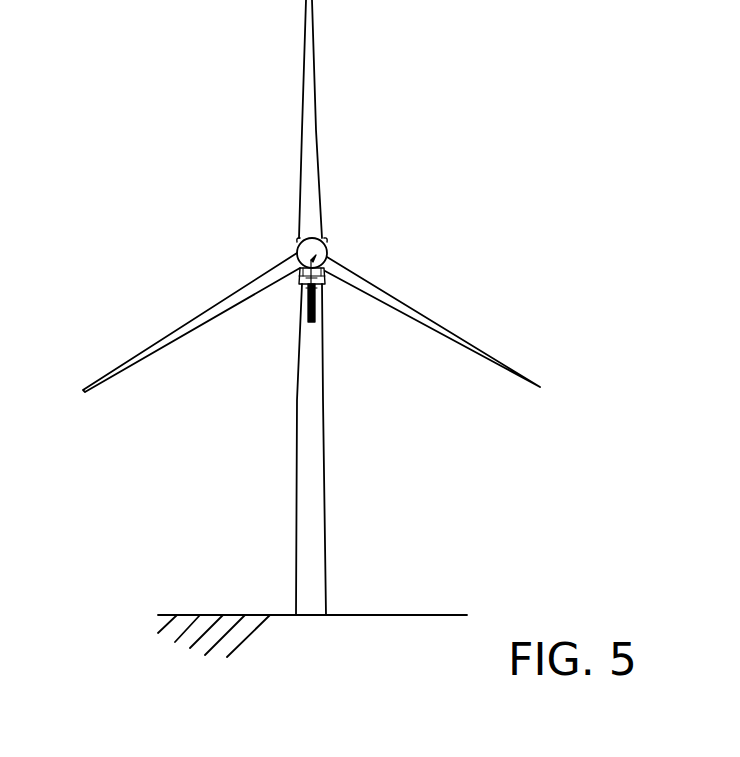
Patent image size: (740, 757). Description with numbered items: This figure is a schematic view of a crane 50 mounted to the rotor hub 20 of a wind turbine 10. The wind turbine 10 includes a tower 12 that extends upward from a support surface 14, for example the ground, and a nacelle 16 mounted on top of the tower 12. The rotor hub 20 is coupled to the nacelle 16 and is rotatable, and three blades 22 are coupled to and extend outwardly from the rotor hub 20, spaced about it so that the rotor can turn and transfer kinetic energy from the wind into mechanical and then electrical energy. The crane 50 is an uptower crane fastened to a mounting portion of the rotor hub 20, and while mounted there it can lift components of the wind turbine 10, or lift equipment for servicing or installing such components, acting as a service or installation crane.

The wind turbine 10 is at (504, 178).
The tower 12 is at (325, 485).
The support surface 14 is at (423, 613).
The nacelle 16 is at (298, 242).
The rotor hub 20 is at (320, 236).
The blade 22 is at (313, 125).
The crane 50 is at (294, 292).